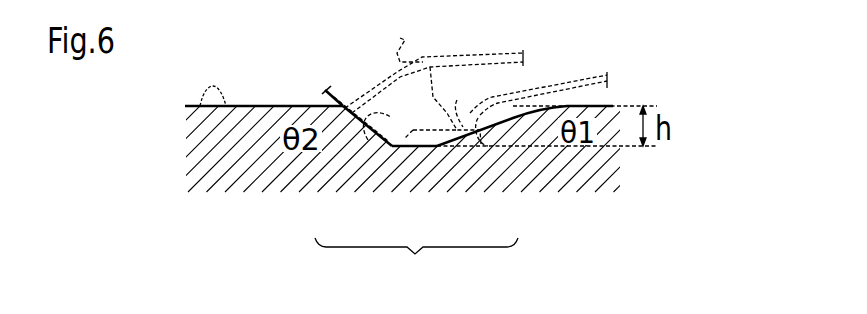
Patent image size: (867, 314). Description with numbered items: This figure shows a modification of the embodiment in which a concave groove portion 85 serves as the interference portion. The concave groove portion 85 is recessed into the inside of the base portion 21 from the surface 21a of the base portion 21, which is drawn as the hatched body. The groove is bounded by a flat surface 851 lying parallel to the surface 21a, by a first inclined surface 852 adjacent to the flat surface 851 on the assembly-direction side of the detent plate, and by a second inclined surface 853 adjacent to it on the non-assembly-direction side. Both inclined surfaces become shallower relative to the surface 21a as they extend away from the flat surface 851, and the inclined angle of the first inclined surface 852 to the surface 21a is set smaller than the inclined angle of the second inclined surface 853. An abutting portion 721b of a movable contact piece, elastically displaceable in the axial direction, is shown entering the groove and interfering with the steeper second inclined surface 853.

The base portion 21 is at (290, 160).
The surface of the base portion 21a is at (226, 106).
The abutting portion 721b is at (421, 58).
The concave groove portion 85 is at (416, 271).
The flat surface 851 is at (415, 149).
The first inclined surface 852 is at (491, 140).
The second inclined surface 853 is at (367, 150).